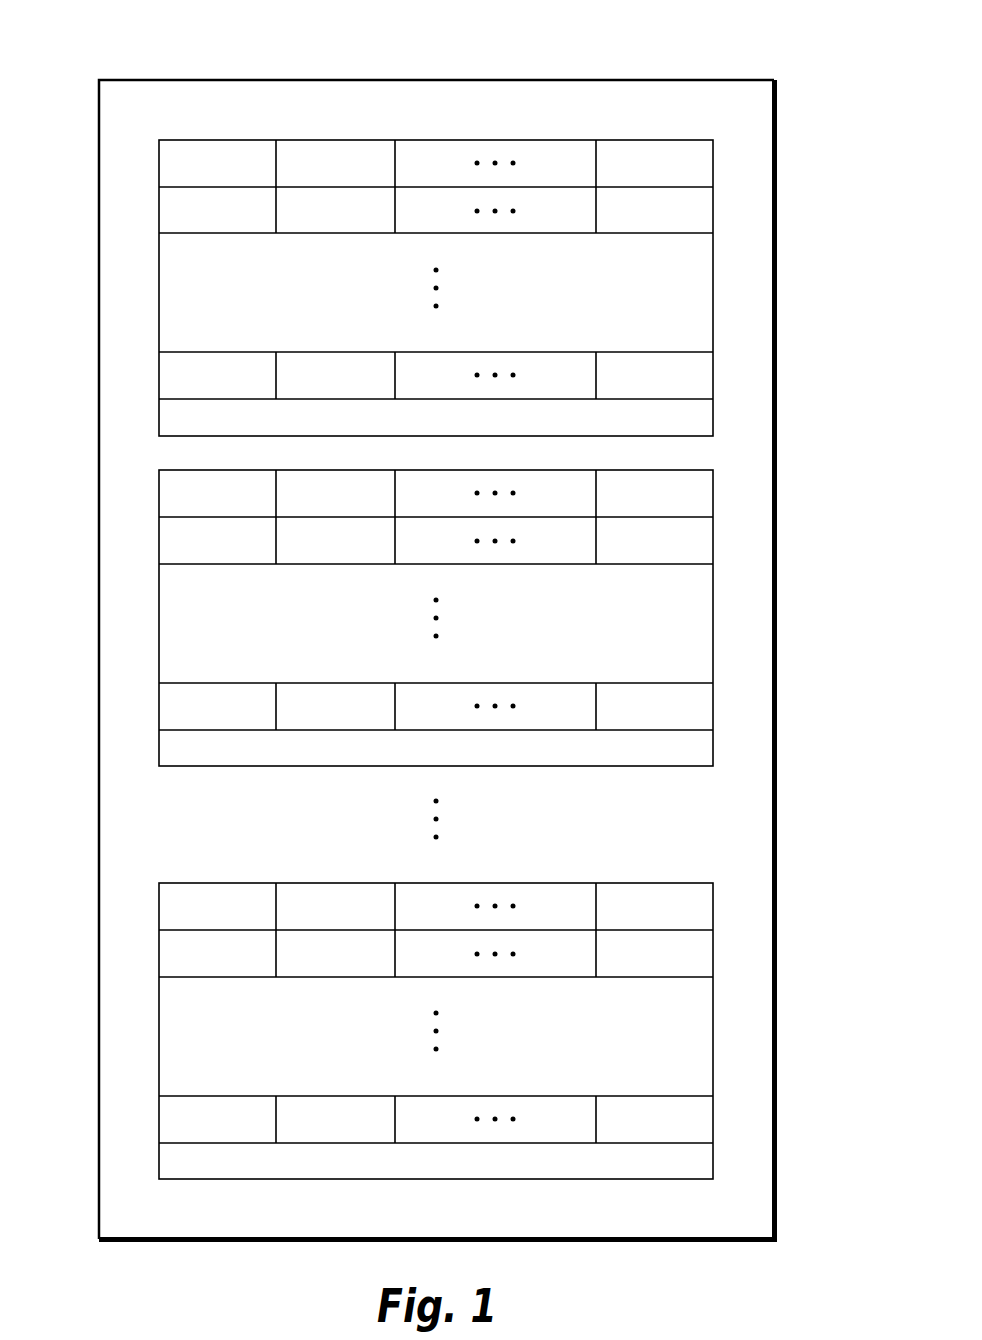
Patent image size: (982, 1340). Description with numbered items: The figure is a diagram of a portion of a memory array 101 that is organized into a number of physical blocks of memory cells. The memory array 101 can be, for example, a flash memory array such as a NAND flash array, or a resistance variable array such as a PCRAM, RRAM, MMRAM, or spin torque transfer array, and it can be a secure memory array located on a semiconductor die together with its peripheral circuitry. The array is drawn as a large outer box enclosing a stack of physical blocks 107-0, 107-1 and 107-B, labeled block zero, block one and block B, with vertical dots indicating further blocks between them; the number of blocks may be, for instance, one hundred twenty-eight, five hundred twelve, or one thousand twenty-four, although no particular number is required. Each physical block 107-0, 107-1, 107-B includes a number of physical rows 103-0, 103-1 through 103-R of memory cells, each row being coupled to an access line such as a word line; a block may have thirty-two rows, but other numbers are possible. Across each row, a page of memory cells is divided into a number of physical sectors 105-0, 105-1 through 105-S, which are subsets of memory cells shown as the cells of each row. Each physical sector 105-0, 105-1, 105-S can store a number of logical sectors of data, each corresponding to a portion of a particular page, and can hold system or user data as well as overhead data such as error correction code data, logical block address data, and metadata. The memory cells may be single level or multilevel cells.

The memory array 101 is at (130, 36).
The physical row 103-0 is at (159, 164).
The physical row 103-1 is at (159, 211).
The physical row 103-R is at (159, 377).
The physical sector 105-0 is at (230, 147).
The physical sector 105-1 is at (324, 147).
The physical sector 105-S is at (666, 147).
The physical block 107-0 is at (435, 273).
The physical block 107-1 is at (713, 624).
The physical block 107-B is at (713, 1038).